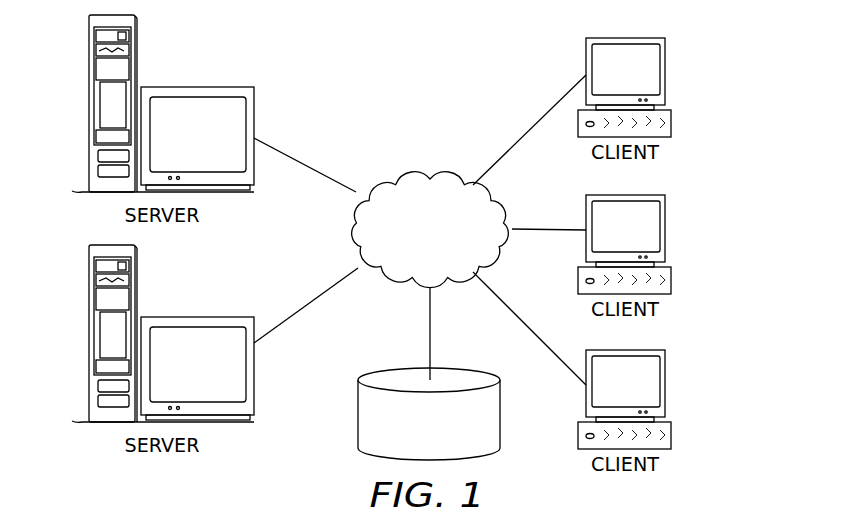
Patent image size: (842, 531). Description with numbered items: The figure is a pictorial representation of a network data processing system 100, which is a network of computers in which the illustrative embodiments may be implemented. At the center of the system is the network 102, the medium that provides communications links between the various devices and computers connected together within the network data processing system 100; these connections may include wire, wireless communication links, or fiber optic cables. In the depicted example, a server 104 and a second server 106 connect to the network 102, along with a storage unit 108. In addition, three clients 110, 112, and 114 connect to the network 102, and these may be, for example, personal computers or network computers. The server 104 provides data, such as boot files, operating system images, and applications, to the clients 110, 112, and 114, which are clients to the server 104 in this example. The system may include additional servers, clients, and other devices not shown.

The network data processing system 100 is at (483, 62).
The network 102 is at (398, 172).
The server 104 is at (88, 104).
The server 106 is at (88, 335).
The storage unit 108 is at (358, 426).
The client 110 is at (667, 72).
The client 112 is at (667, 229).
The client 114 is at (667, 385).